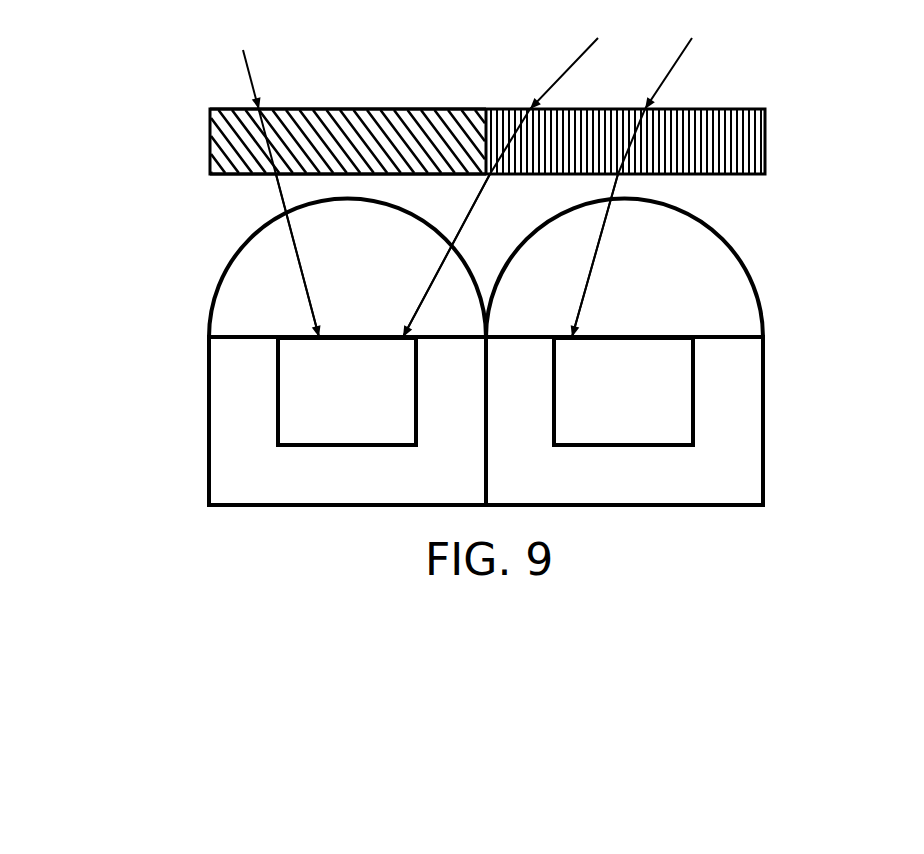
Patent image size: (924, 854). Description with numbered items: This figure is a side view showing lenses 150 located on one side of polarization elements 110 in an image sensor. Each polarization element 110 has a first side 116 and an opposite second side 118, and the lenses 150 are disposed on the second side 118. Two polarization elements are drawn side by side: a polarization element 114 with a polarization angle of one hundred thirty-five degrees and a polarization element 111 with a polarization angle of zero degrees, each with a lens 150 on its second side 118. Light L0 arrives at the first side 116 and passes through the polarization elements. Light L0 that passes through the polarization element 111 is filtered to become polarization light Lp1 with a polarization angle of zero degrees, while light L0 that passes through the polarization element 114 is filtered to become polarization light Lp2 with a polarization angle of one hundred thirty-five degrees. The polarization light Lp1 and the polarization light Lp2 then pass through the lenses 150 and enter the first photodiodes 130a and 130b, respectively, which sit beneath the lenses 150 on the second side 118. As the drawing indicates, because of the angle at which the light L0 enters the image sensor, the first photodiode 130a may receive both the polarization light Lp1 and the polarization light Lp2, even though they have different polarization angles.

The polarization element 110 is at (514, 101).
The polarization element with a polarization angle of 135° 114 is at (355, 109).
The polarization element with a polarization angle of 0° 111 is at (745, 109).
The first side 116 is at (212, 120).
The second side 118 is at (210, 153).
The light L0 is at (470, 176).
The polarization light with a polarization angle of 0° Lp1 is at (487, 192).
The polarization light with a polarization angle of 135° Lp2 is at (277, 192).
The lens 150 is at (216, 285).
The first photodiode 130a is at (278, 400).
The first photodiode 130b is at (693, 395).